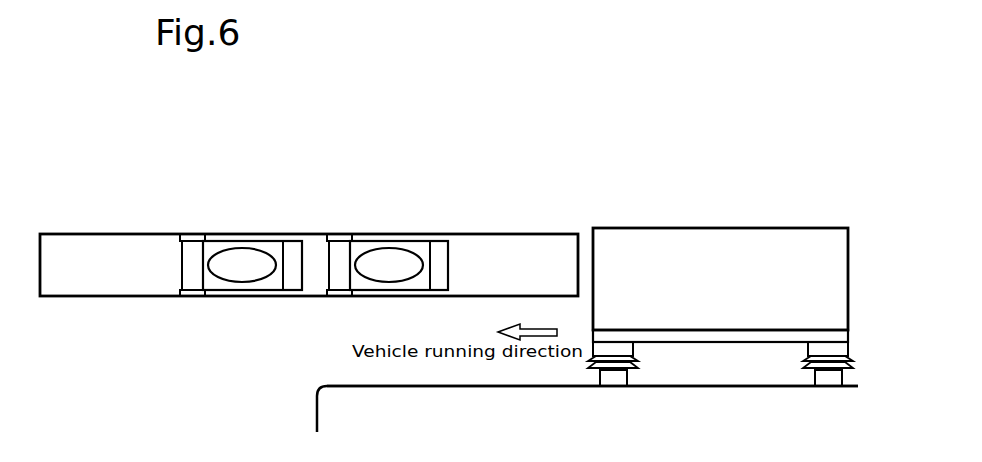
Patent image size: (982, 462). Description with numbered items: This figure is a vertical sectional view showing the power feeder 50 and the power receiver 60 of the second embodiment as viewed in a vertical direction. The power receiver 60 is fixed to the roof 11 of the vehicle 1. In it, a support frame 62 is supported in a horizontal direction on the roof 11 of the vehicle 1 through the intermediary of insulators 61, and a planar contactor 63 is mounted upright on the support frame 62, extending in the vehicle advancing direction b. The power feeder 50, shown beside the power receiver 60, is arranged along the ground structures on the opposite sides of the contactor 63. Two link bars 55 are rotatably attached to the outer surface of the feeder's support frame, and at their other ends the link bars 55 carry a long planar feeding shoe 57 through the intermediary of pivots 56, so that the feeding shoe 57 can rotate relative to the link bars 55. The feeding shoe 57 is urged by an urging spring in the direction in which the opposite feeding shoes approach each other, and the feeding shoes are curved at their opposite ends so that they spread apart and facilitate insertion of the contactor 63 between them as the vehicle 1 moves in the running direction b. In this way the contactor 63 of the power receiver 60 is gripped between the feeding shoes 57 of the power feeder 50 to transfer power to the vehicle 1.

The vehicle 1 is at (528, 431).
The roof 11 is at (341, 384).
The power feeder 50 is at (309, 198).
The link bars 55 is at (214, 243).
The pivots 56 is at (187, 262).
The feeding shoe 57 is at (500, 234).
The power receiver 60 is at (720, 259).
The insulators 61 is at (636, 356).
The support frame 62 is at (713, 335).
The contactor 63 is at (707, 295).
The vehicle running direction b is at (530, 326).